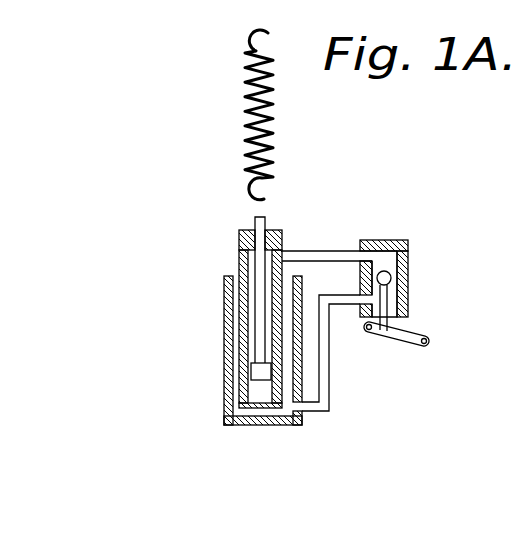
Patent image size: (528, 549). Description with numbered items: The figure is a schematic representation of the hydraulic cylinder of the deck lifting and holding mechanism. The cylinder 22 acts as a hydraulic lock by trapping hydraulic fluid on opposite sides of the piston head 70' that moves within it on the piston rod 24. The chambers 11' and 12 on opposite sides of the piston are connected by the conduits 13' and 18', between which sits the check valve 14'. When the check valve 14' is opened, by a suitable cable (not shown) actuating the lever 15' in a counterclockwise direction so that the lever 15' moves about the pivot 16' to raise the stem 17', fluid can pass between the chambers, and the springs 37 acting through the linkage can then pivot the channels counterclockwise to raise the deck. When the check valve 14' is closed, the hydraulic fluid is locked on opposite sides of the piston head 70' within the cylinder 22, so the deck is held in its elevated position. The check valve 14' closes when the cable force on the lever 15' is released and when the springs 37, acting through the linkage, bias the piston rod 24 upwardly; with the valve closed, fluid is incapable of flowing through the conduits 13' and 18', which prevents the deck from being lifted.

The springs 37 is at (246, 117).
The piston rod 24 is at (252, 218).
The conduit 18' is at (345, 260).
The check valve 14' is at (433, 262).
The cylinder 22 is at (228, 290).
The stem 17' is at (430, 326).
The chamber 11' is at (225, 316).
The pivot 16' is at (363, 331).
The lever 15' is at (418, 363).
The piston head 70' is at (202, 366).
The conduit 13' is at (355, 356).
The chamber 12 is at (255, 396).